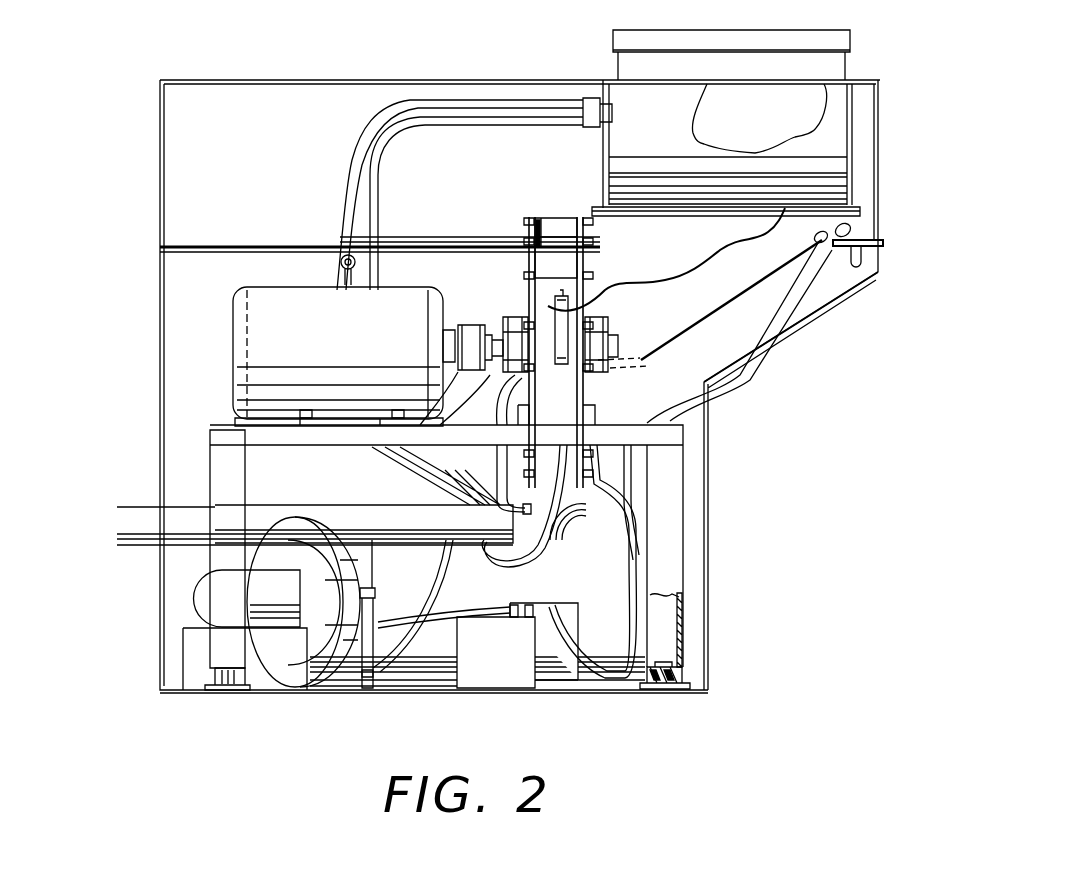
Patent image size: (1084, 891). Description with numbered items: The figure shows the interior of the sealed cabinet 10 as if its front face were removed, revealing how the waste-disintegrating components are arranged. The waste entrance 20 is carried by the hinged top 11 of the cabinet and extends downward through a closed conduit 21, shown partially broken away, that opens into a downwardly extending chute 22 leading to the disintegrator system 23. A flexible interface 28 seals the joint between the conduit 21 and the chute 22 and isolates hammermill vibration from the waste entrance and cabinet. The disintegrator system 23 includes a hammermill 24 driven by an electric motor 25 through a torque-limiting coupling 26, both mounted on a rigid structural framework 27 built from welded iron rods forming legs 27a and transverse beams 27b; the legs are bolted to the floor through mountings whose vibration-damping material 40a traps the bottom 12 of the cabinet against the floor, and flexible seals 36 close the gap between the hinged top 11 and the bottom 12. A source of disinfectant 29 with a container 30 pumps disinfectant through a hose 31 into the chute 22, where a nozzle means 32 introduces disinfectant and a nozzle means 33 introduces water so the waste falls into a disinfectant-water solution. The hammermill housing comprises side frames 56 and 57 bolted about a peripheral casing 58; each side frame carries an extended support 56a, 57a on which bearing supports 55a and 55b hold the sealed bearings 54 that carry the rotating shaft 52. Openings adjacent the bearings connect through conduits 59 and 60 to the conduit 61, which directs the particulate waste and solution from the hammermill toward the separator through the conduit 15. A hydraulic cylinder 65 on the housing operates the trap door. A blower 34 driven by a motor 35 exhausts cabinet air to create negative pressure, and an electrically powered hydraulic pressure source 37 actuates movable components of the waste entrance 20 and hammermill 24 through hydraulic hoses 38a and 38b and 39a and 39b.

The cabinet 10 is at (337, 48).
The hinged top 11 is at (160, 118).
The bottom of the cabinet 12 is at (652, 688).
The conduit 15 is at (140, 510).
The waste entrance 20 is at (874, 51).
The closed conduit 21 is at (832, 142).
The downwardly extending chute 22 is at (870, 288).
The disintegrator system 23 is at (478, 236).
The hammermill 24 is at (503, 258).
The electric motor 25 is at (252, 320).
The coupling 26 is at (470, 325).
The structural framework 27 is at (630, 415).
The legs 27a is at (225, 468).
The transverse beams 27b is at (268, 436).
The flexible interface 28 is at (862, 211).
The source of disinfectant 29 is at (546, 700).
The container 30 is at (512, 662).
The hose 31 is at (677, 400).
The means to introduce disinfectant 32 is at (822, 245).
The means to introduce water 33 is at (883, 244).
The blower 34 is at (340, 648).
The motor 35 is at (275, 600).
The flexible seals 36 is at (160, 248).
The hydraulic pump or pressure source 37 is at (430, 650).
The hydraulic hose 38a is at (358, 140).
The hydraulic hose 38b is at (372, 202).
The hydraulic hose 39a is at (497, 557).
The hydraulic hose 39b is at (526, 557).
The vibration-damping material 40a is at (222, 680).
The rotating shaft 52 is at (660, 342).
The sealed bearings 54 is at (500, 377).
The bearing support 55a is at (512, 320).
The bearing support 55b is at (605, 330).
The side frame 56 is at (532, 216).
The extended support 56a is at (492, 440).
The side frame 57 is at (584, 234).
The extended support 57a is at (628, 350).
The peripheral casing 58 is at (553, 232).
The conduit 59 is at (507, 472).
The conduit 60 is at (584, 508).
The conduit 61 is at (587, 518).
The hydraulic cylinder 65 is at (565, 316).